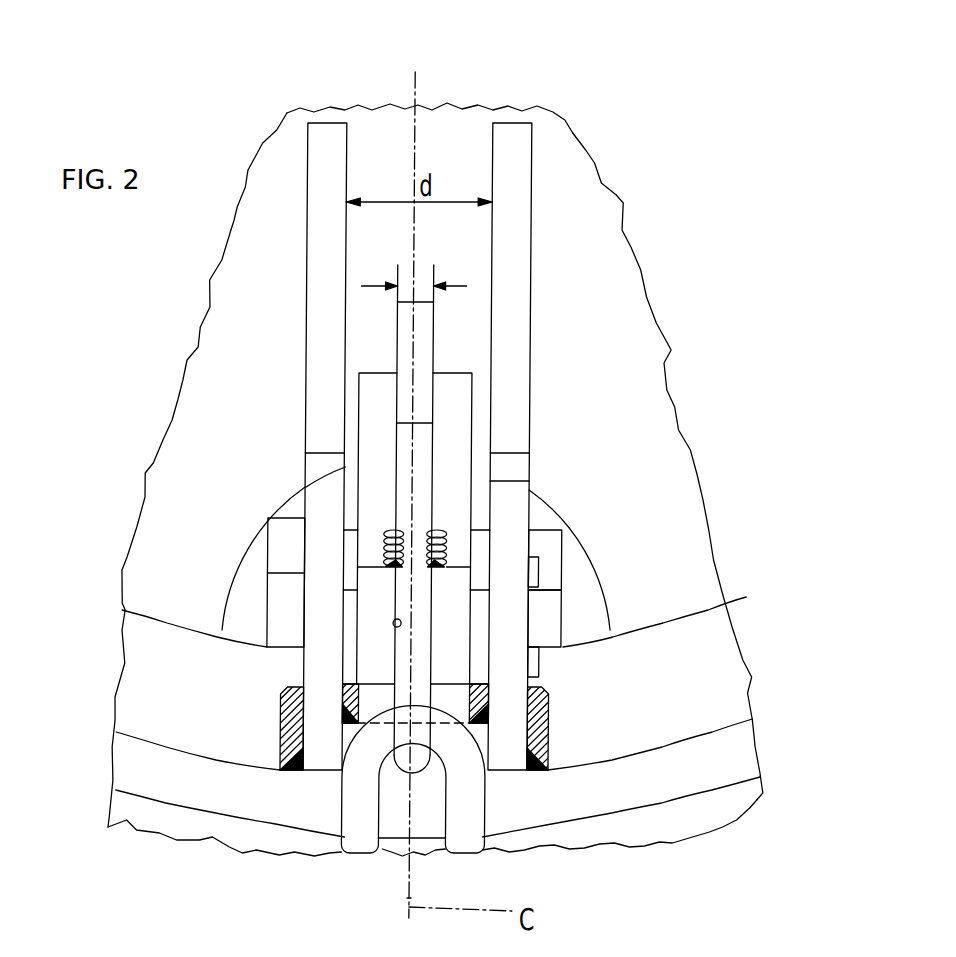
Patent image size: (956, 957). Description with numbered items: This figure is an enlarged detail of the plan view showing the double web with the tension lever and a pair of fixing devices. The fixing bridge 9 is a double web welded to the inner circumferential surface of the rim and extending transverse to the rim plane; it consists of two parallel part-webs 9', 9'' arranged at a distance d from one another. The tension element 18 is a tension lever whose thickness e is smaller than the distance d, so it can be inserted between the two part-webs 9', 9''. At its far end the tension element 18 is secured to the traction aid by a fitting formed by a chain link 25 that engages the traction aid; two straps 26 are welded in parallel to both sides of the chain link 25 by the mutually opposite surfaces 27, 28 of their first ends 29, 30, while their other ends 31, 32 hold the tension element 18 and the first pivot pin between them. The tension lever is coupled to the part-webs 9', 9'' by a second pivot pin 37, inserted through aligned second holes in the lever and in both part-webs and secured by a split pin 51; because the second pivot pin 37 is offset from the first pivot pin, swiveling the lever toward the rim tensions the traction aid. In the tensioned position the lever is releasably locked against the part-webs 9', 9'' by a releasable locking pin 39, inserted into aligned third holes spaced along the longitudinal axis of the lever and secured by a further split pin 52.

The fixing bridge 9 is at (423, 65).
The part-web 9' is at (262, 420).
The part-web 9'' is at (585, 415).
The tension element 18 is at (394, 467).
The chain link 25 is at (373, 813).
The straps 26 is at (451, 645).
The surface 27 is at (397, 623).
The surface 28 is at (399, 603).
The first end 29 is at (397, 682).
The first end 30 is at (444, 690).
The other end 31 is at (369, 400).
The other end 32 is at (460, 387).
The second pivot pin 37 is at (547, 608).
The releasable locking pin 39 is at (551, 547).
The split pin 51 is at (541, 663).
The split pin 52 is at (535, 497).